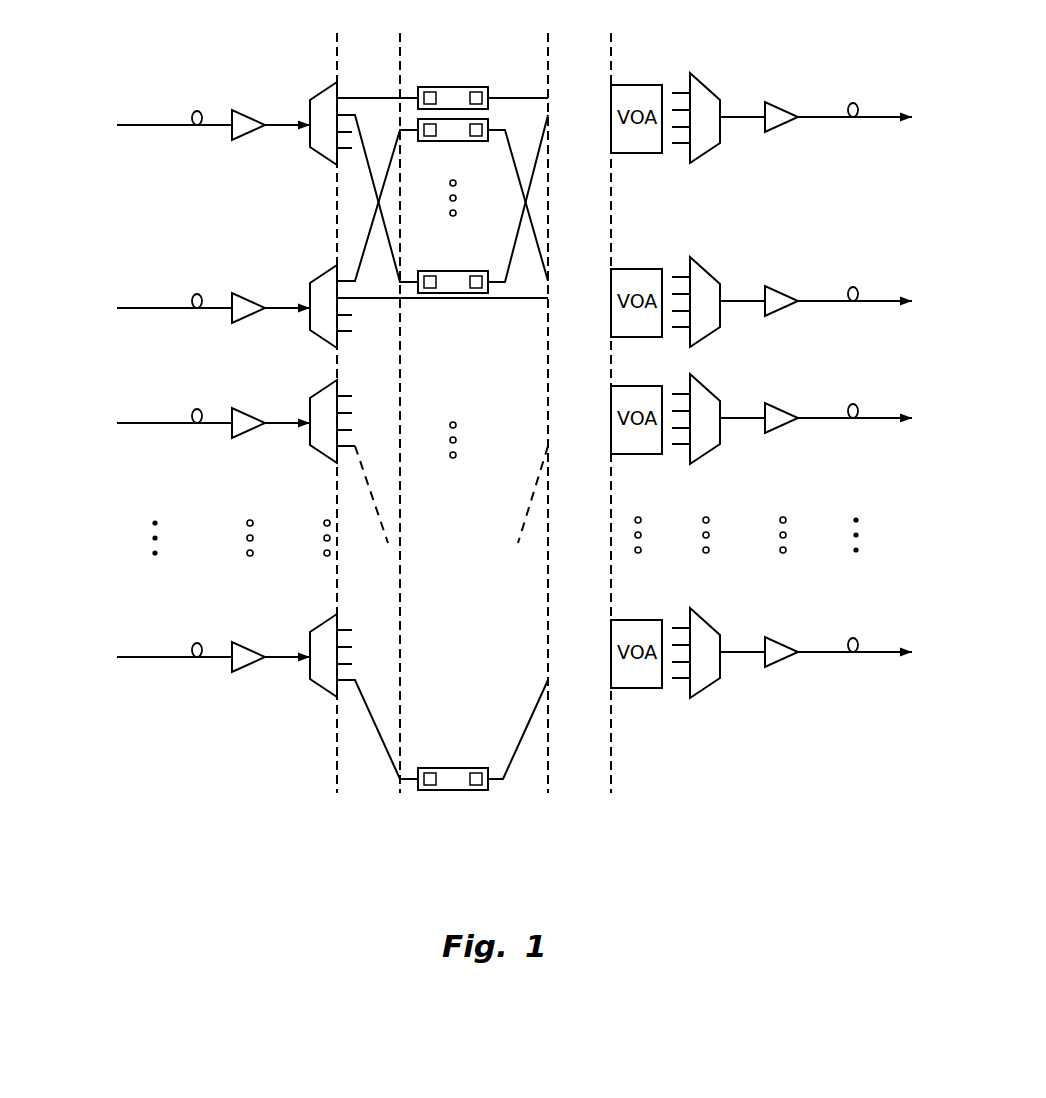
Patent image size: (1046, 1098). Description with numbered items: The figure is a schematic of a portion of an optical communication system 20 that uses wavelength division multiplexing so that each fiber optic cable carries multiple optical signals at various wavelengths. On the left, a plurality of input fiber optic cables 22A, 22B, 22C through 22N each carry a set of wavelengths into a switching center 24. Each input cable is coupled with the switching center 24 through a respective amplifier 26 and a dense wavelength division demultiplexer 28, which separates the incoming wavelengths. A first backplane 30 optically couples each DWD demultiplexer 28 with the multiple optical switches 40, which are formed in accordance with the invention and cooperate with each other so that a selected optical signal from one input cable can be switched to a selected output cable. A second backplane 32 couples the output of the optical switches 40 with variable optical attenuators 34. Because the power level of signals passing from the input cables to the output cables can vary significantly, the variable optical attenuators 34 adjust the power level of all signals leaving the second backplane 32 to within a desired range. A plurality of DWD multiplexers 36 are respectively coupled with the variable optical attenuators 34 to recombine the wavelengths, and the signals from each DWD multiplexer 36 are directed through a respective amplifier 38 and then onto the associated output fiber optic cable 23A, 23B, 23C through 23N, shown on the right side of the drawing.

The communication system 20 is at (215, 728).
The input fiber optic cable 22A is at (152, 127).
The input fiber optic cable 22B is at (152, 310).
The input fiber optic cable 22C is at (152, 425).
The input fiber optic cable 22N is at (152, 659).
The output fiber optic cable 23A is at (873, 115).
The output fiber optic cable 23B is at (873, 299).
The output fiber optic cable 23C is at (873, 416).
The output fiber optic cable 23N is at (873, 654).
The switching center 24 is at (335, 777).
The amplifier 26 is at (252, 108).
The DWD demultiplexer 28 is at (322, 90).
The backplane 30 is at (360, 783).
The second backplane 32 is at (594, 783).
The variable optical attenuator 34 is at (645, 85).
The DWD multiplexer 36 is at (705, 86).
The amplifier 38 is at (782, 103).
The optical switch 40 is at (450, 87).